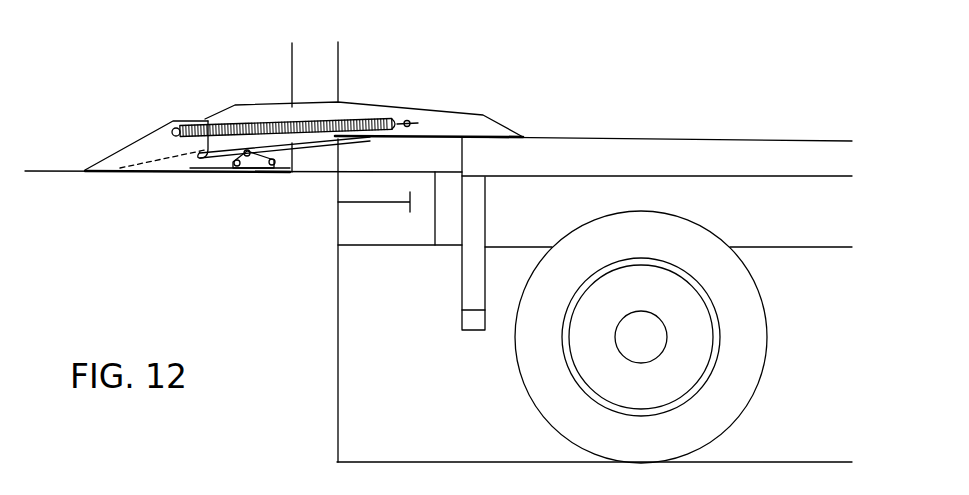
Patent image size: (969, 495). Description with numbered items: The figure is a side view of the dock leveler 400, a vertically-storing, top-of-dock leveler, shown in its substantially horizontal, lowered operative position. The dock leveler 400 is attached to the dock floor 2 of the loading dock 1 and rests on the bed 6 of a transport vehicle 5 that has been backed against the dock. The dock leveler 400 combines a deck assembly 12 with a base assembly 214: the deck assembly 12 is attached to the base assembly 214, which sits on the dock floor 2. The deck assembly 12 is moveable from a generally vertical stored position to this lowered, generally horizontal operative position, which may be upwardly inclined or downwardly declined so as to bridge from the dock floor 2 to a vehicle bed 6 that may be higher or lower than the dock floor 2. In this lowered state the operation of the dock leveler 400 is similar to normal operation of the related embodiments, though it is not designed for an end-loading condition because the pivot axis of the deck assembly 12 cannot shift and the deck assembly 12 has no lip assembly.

The loading dock 1 is at (230, 223).
The dock floor 2 is at (63, 170).
The transport vehicle 5 is at (791, 130).
The bed 6 is at (634, 141).
The deck assembly 12 is at (400, 85).
The base assembly 214 is at (123, 132).
The dock leveler 400 is at (197, 85).